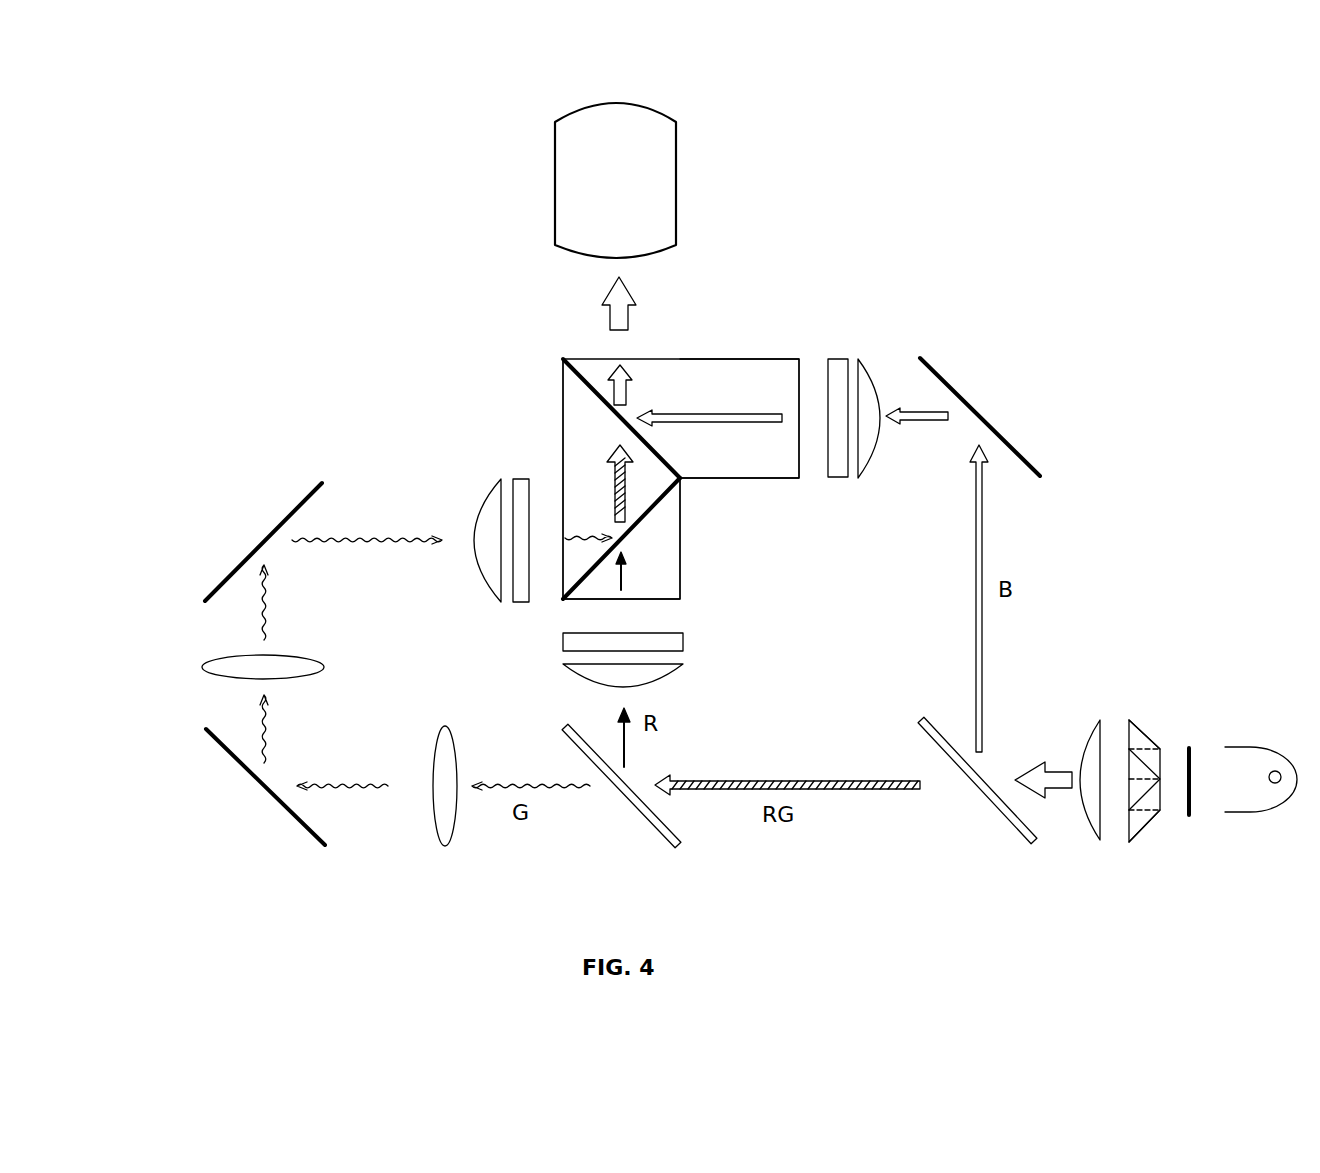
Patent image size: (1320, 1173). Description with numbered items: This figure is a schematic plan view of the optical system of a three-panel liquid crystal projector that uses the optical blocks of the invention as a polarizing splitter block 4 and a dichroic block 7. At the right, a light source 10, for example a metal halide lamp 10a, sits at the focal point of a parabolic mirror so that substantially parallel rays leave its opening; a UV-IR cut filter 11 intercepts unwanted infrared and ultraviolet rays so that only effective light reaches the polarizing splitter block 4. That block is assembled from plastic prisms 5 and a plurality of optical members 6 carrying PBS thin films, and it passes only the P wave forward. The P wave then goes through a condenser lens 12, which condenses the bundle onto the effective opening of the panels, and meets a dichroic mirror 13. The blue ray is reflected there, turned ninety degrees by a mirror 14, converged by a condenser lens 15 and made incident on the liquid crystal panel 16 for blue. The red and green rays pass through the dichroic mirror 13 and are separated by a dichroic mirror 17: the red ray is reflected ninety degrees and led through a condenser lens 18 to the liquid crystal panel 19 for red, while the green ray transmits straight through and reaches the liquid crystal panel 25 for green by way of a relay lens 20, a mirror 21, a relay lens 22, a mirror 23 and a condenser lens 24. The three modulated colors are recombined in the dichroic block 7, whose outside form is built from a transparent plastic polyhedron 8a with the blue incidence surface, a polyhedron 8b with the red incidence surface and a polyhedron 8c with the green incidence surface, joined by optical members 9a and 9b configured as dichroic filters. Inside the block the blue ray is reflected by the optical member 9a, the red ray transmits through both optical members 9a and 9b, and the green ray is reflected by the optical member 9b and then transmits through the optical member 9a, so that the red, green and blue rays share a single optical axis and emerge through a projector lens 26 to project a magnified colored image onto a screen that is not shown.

The polarizing splitter block 4 is at (1138, 797).
The prisms 5 is at (1140, 735).
The optical members 6 is at (1129, 768).
The dichroic block 7 is at (648, 477).
The polyhedron 8a is at (752, 362).
The polyhedron 8b is at (668, 563).
The polyhedron 8c is at (565, 408).
The optical member 9a is at (566, 360).
The optical member 9b is at (563, 599).
The light source 10 is at (1270, 812).
The metal halide lamp 10a is at (1279, 773).
The UV-IR cut filter 11 is at (1192, 800).
The condenser lens 12 is at (1090, 826).
The dichroic mirror 13 is at (1008, 820).
The mirror 14 is at (1020, 462).
The condenser lens 15 is at (864, 368).
The liquid crystal panel 16 is at (834, 358).
The dichroic mirror 17 is at (660, 835).
The condenser lens 18 is at (676, 667).
The liquid crystal panel 19 is at (684, 643).
The relay lens 20 is at (455, 830).
The mirror 21 is at (317, 831).
The relay lens 22 is at (203, 668).
The mirror 23 is at (314, 491).
The condenser lens 24 is at (486, 505).
The liquid crystal panel 25 is at (518, 479).
The projector lens 26 is at (676, 163).